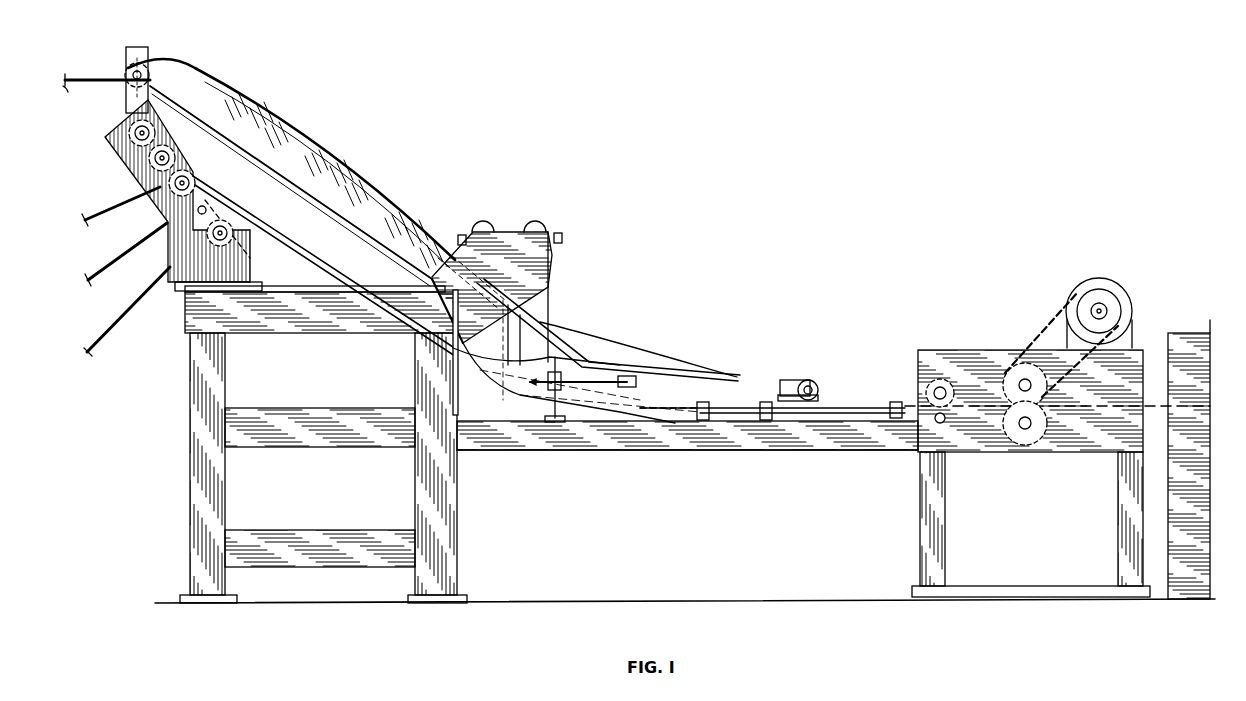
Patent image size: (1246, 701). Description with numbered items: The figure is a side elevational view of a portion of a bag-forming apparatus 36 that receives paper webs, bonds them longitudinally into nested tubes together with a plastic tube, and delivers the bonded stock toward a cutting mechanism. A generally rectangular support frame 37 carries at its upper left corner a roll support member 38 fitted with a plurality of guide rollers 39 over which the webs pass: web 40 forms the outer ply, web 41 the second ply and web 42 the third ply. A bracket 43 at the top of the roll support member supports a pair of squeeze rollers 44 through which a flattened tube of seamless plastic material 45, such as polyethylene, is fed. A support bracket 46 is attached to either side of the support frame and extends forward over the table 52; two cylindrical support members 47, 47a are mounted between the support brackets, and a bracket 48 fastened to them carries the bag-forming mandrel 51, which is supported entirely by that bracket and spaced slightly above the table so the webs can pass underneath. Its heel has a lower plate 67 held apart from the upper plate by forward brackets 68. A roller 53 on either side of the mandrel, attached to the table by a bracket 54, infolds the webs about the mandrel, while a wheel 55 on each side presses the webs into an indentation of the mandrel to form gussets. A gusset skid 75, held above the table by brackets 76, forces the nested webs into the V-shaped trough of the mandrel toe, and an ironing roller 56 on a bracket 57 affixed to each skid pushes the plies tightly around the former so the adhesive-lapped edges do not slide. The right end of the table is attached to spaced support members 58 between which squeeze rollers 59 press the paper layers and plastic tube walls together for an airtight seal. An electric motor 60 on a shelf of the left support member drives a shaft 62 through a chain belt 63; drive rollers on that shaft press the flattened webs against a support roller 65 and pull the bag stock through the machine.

The bag-forming apparatus 36 is at (702, 452).
The support frame 37 is at (185, 480).
The roll support member 38 is at (143, 172).
The guide rollers 39 is at (180, 160).
The web 40 is at (157, 300).
The web 41 is at (141, 262).
The web 42 is at (132, 205).
The bracket 43 is at (148, 52).
The squeeze rollers 44 is at (128, 72).
The flattened tube of seamless plastic material 45 is at (112, 85).
The support bracket 46 is at (540, 283).
The cylindrical support member 47 is at (485, 222).
The cylindrical support member 47a is at (560, 216).
The bracket 48 is at (552, 295).
The bag-forming mandrel 51 is at (560, 333).
The table 52 is at (575, 450).
The roller 53 is at (632, 378).
The bracket 54 is at (552, 412).
The wheel 55 is at (706, 400).
The ironing roller 56 is at (815, 390).
The bracket 57 is at (786, 394).
The support members 58 is at (1070, 442).
The squeeze rollers 59 is at (946, 420).
The electric motor 60 is at (1118, 292).
The shaft 62 is at (1012, 362).
The chain belt 63 is at (1063, 322).
The support roller 65 is at (1035, 448).
The lower plate 67 is at (520, 397).
The forward brackets 68 is at (554, 366).
The gusset skid 75 is at (853, 405).
The brackets 76 is at (895, 402).